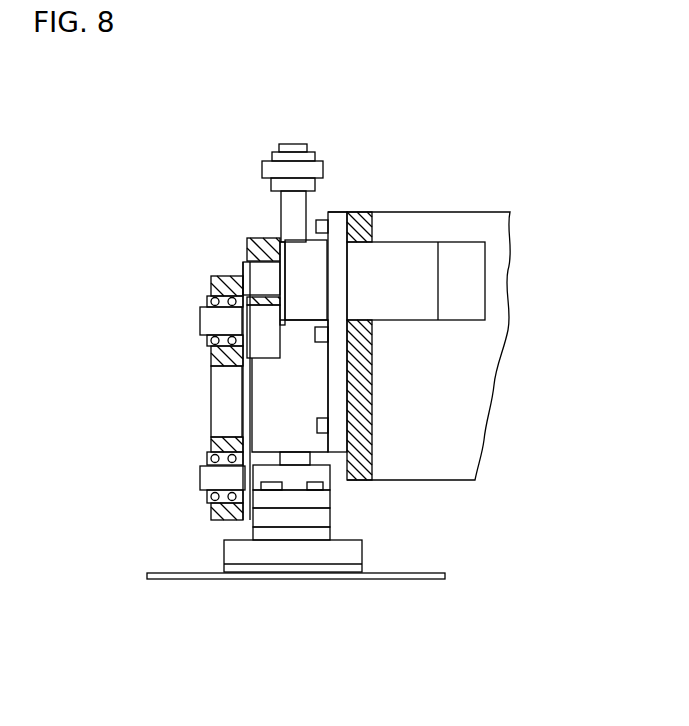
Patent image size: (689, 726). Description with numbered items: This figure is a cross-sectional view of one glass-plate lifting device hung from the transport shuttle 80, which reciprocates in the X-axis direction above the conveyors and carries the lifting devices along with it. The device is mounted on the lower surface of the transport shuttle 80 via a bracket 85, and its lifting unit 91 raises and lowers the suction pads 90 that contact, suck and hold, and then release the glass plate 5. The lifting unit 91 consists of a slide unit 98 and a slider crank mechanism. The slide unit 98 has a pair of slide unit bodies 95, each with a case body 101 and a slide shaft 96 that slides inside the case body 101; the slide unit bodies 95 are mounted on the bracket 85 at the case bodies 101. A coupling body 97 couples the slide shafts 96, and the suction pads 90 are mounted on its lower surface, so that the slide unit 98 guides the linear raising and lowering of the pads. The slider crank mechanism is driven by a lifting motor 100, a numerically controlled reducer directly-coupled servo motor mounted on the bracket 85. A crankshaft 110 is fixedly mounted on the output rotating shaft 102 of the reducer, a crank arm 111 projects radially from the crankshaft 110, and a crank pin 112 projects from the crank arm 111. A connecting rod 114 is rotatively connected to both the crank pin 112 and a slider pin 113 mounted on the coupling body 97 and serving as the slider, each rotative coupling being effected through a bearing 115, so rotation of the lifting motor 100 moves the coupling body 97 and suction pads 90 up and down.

The glass plate 5 is at (403, 577).
The transport shuttle 80 is at (497, 223).
The bracket 85 is at (367, 435).
The suction pads 90 is at (248, 555).
The lifting unit 91 is at (143, 193).
The slide unit body 95 is at (308, 400).
The slide shaft 96 is at (293, 213).
The coupling body 97 is at (307, 515).
The slide unit 98 is at (303, 370).
The lifting motor 100 is at (387, 270).
The case body 101 is at (293, 440).
The output rotating shaft 102 is at (263, 278).
The crankshaft 110 is at (253, 252).
The crank arm 111 is at (263, 343).
The crank pin 112 is at (215, 322).
The slider pin 113 is at (218, 482).
The connecting rod 114 is at (223, 410).
The bearing 115 is at (210, 300).